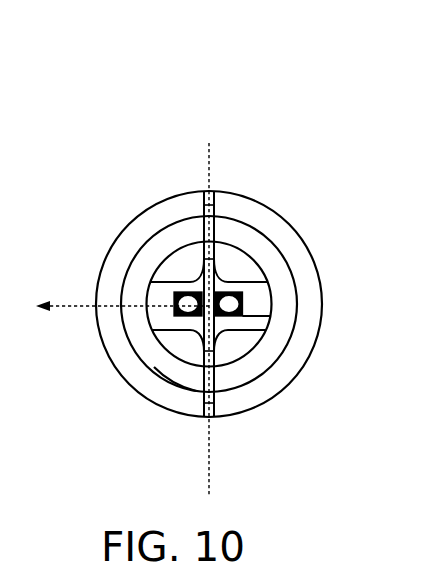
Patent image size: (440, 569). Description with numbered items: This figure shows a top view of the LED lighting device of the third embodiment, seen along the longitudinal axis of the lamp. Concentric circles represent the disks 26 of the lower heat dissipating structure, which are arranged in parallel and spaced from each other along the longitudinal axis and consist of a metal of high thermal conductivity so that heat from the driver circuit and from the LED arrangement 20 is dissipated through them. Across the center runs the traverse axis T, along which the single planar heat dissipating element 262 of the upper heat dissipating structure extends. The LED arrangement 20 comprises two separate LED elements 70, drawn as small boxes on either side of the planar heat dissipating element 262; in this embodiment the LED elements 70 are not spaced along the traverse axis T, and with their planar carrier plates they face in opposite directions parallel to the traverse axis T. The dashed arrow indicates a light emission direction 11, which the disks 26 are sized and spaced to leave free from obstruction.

The traverse axis T is at (205, 158).
The disks 26 is at (245, 248).
The planar heat dissipating element 262 is at (192, 378).
The LED arrangement 20 is at (237, 339).
The LED elements 70 is at (173, 307).
The light emission direction 11 is at (72, 313).